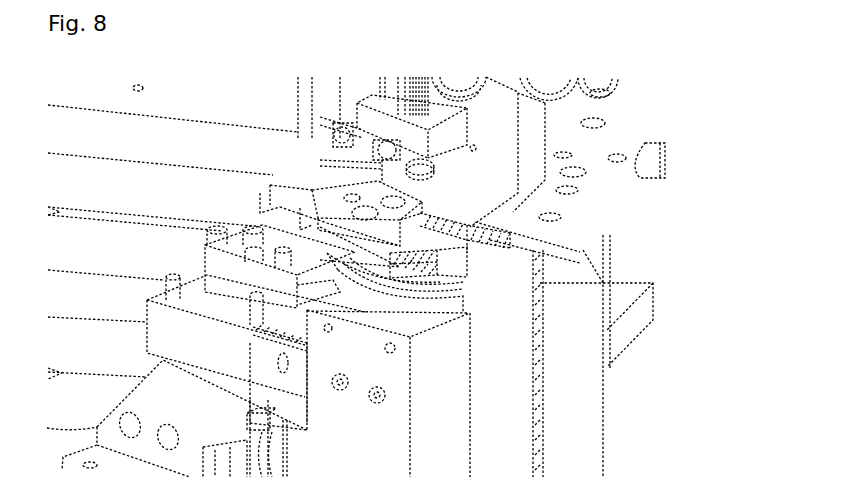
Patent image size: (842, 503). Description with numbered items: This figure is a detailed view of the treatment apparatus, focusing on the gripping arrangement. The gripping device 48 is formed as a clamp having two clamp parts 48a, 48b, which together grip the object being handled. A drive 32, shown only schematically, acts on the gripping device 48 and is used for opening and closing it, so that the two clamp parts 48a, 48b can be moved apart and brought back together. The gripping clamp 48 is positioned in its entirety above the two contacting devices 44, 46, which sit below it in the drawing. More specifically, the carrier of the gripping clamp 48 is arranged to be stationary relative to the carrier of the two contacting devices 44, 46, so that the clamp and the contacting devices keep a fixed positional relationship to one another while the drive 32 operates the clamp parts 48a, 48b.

The drive 32 is at (320, 197).
The contacting device 44 is at (450, 440).
The contacting device 46 is at (570, 350).
The gripping device 48 is at (565, 263).
The clamp part 48a is at (420, 273).
The clamp part 48b is at (468, 231).